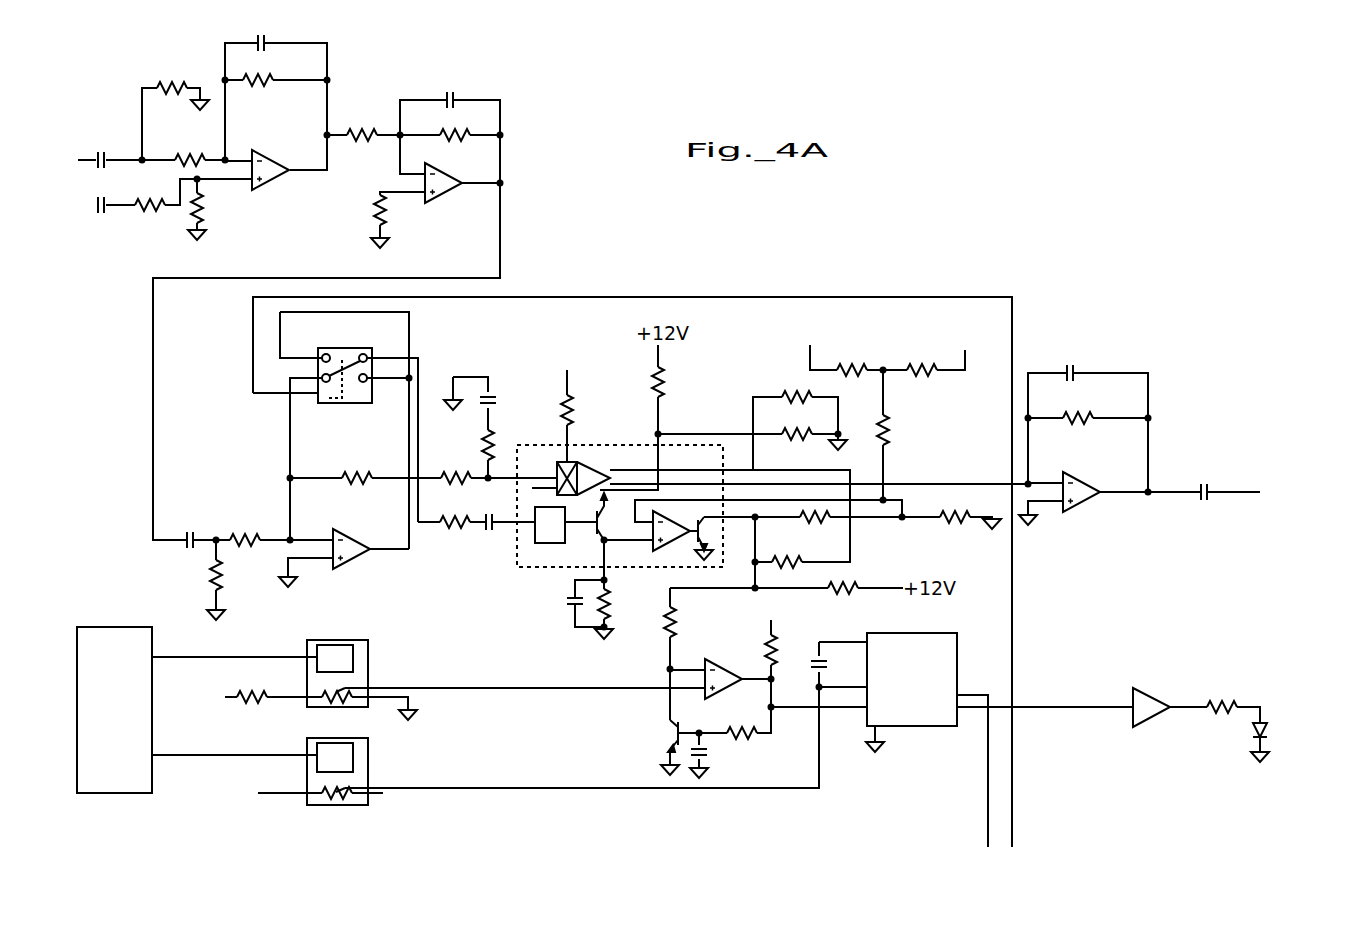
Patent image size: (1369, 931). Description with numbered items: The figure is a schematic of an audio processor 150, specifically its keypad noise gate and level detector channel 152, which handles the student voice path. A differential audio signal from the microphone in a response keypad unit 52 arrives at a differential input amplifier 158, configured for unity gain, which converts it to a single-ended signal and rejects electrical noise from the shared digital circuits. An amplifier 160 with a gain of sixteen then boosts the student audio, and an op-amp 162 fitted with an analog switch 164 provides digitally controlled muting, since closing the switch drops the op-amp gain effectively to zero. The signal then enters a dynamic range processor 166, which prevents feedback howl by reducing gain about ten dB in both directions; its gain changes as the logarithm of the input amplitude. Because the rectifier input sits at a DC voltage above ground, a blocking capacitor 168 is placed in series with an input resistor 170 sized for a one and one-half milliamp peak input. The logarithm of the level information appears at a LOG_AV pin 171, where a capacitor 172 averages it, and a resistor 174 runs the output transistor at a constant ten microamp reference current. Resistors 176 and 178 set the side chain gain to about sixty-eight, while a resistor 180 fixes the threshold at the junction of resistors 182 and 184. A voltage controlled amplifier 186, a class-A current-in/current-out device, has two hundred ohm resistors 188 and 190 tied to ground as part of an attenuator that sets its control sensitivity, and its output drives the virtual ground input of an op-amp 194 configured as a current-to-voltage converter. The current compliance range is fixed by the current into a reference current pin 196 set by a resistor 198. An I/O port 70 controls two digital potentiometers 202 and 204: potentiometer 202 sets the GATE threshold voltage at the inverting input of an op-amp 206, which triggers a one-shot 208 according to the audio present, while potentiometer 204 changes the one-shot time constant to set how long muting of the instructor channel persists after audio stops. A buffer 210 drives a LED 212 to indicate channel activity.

The response keypad unit 52 is at (132, 168).
The I/O port 70 is at (125, 720).
The audio processor 150 is at (948, 166).
The keypad noise gate and level detector channel 152 is at (95, 519).
The differential input amplifier 158 is at (284, 141).
The amplifier 160 is at (444, 192).
The op-amp 162 is at (354, 545).
The analog switch 164 is at (334, 403).
The dynamic range processor 166 is at (585, 445).
The blocking capacitor 168 is at (488, 535).
The input resistor 170 is at (450, 520).
The LOG_AV pin 171 is at (606, 562).
The capacitor 172 is at (570, 614).
The resistor 174 is at (607, 592).
The resistor 176 is at (802, 521).
The resistor 178 is at (944, 519).
The resistor 180 is at (888, 425).
The resistor 182 is at (839, 370).
The resistor 184 is at (931, 382).
The voltage controlled amplifier 186 is at (584, 470).
The resistor 188 is at (789, 436).
The resistor 190 is at (789, 399).
The op-amp 194 is at (1080, 509).
The reference current pin 196 is at (564, 438).
The resistor 198 is at (571, 405).
The digital potentiometer 202 is at (377, 644).
The digital potentiometer 204 is at (368, 770).
The op-amp 206 is at (724, 662).
The one-shot 208 is at (930, 690).
The buffer 210 is at (1152, 690).
The LED 212 is at (1268, 726).